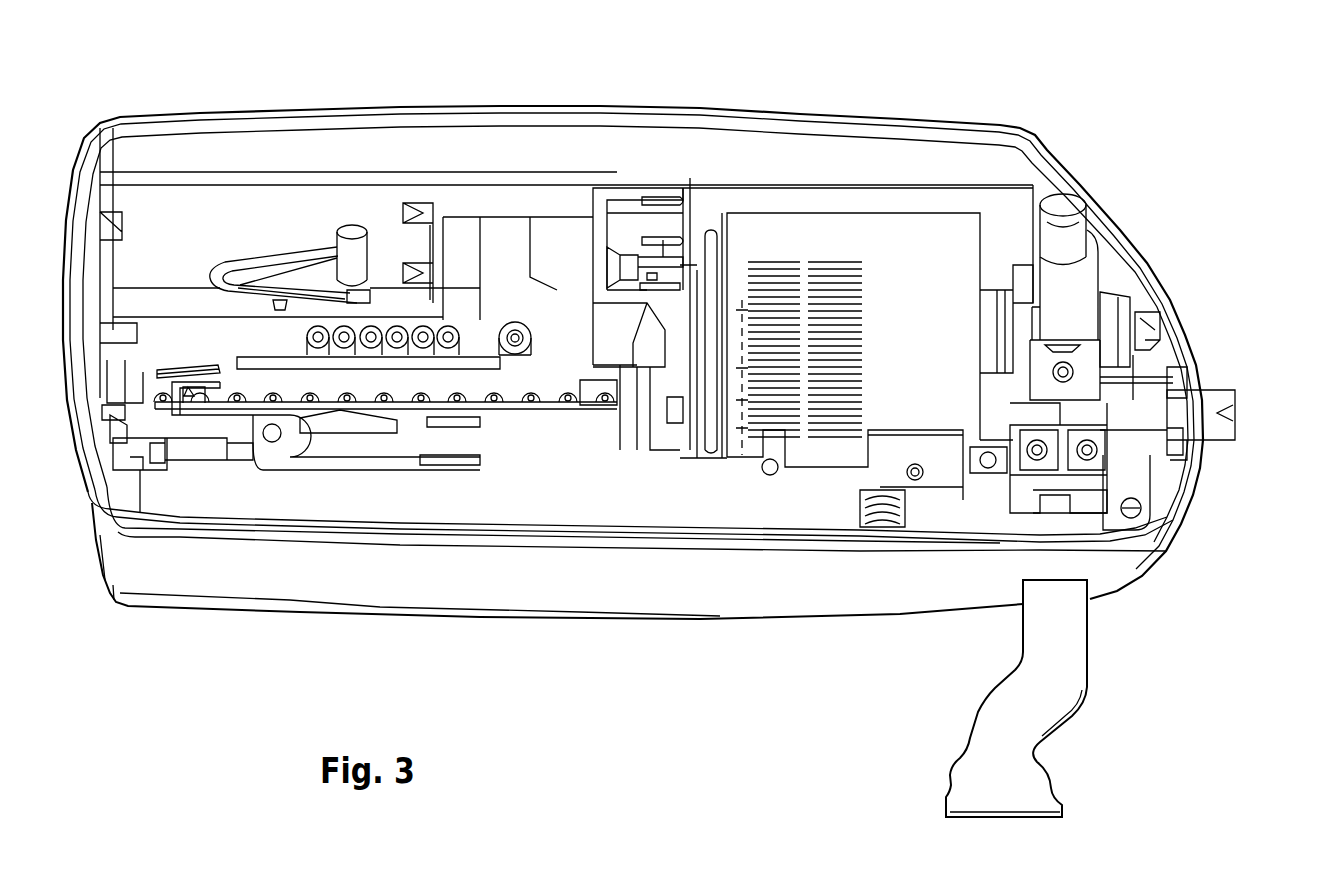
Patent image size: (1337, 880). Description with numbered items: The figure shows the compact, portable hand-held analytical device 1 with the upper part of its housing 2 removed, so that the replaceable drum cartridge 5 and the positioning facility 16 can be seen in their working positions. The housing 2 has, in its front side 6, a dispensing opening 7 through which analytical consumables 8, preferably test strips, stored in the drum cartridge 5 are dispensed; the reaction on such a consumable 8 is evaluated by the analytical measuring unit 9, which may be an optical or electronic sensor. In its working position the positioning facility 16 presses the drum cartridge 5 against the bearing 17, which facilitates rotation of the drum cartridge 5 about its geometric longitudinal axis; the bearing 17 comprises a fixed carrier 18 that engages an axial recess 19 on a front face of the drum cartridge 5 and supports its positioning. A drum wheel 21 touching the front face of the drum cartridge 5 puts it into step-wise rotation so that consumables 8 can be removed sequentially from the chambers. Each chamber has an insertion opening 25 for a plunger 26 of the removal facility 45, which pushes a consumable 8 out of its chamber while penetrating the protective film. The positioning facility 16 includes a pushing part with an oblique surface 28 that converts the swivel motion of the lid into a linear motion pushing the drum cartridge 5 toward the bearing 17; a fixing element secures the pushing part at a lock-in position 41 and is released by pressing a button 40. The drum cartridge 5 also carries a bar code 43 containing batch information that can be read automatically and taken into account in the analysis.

The hand-held analytical device 1 is at (797, 100).
The housing 2 is at (750, 600).
The drum cartridge 5 is at (945, 232).
The front side 6 is at (1214, 367).
The dispensing opening 7 is at (1207, 456).
The analytical consumables 8 is at (1170, 414).
The analytical measuring unit 9 is at (1090, 392).
The positioning facility 16 is at (1146, 300).
The bearing 17 is at (688, 333).
The carrier 18 is at (648, 328).
The axial recess 19 is at (722, 372).
The drum wheel 21 is at (712, 250).
The insertion opening 25 is at (725, 400).
The plunger 26 is at (675, 430).
The oblique surface 28 is at (1158, 325).
The button 40 is at (1068, 210).
The lock-in position 41 is at (1068, 298).
The bar code 43 is at (845, 265).
The removal facility 45 is at (482, 388).